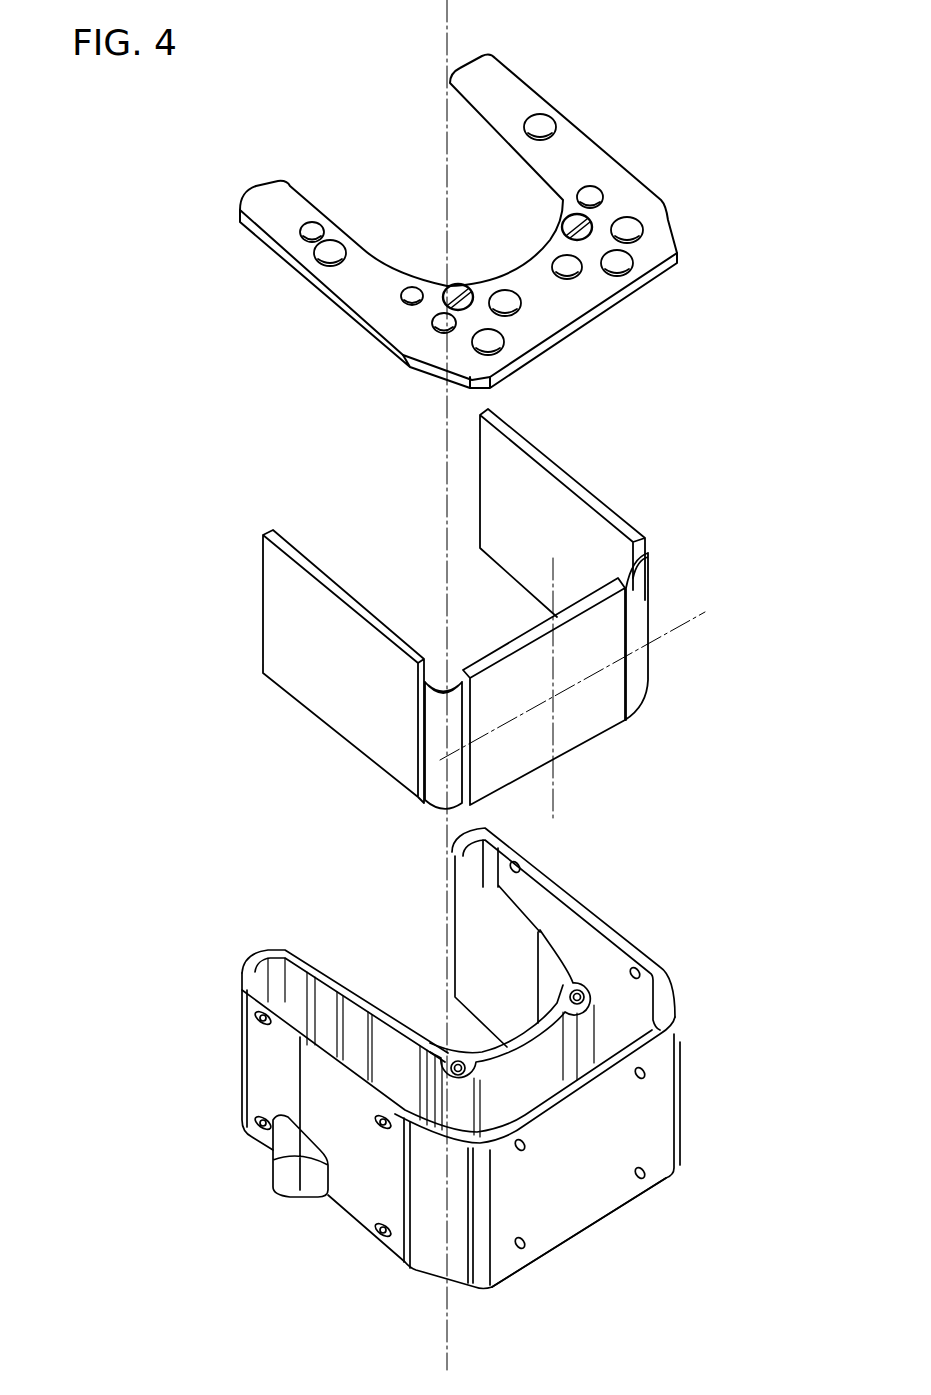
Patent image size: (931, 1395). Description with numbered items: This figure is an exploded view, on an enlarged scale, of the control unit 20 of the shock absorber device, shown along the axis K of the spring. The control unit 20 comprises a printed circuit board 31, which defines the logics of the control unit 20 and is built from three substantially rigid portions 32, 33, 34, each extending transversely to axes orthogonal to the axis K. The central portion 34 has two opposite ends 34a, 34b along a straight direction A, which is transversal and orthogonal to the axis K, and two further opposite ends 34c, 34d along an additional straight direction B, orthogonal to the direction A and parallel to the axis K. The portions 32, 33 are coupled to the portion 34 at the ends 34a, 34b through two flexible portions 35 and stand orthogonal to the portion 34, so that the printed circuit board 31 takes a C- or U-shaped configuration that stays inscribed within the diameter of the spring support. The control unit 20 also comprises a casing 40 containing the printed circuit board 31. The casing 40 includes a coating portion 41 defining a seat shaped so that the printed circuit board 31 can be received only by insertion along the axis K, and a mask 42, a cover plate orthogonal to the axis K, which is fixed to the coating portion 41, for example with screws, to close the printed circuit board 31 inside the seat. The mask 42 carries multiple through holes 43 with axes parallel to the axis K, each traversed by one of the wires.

The control unit 20 is at (730, 421).
The printed circuit board 31 is at (463, 612).
The rigid portion 32 is at (278, 603).
The rigid portion 33 is at (583, 492).
The rigid portion 34 is at (539, 681).
The end of portion 34 34a is at (478, 703).
The end of portion 34 34b is at (620, 679).
The end of portion 34 34c is at (518, 665).
The end of portion 34 34d is at (565, 735).
The flexible portion 35 is at (647, 607).
The casing 40 is at (247, 965).
The coating portion 41 is at (683, 1010).
The mask 42 is at (520, 95).
The through holes 43 is at (298, 232).
The axis K is at (447, 180).
The straight direction A is at (670, 625).
The straight direction B is at (556, 822).